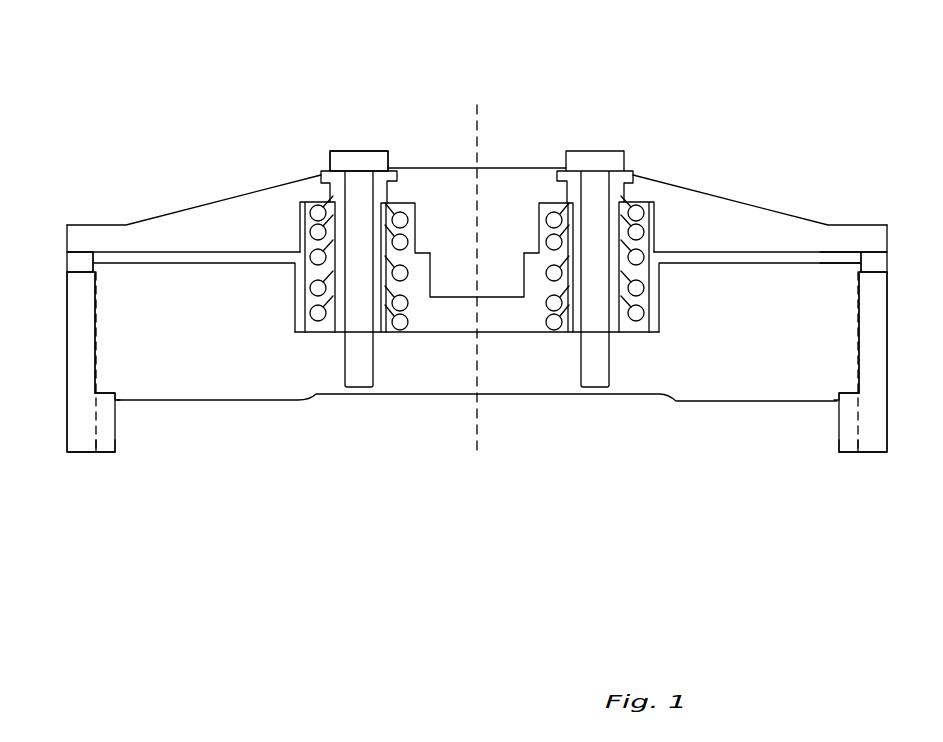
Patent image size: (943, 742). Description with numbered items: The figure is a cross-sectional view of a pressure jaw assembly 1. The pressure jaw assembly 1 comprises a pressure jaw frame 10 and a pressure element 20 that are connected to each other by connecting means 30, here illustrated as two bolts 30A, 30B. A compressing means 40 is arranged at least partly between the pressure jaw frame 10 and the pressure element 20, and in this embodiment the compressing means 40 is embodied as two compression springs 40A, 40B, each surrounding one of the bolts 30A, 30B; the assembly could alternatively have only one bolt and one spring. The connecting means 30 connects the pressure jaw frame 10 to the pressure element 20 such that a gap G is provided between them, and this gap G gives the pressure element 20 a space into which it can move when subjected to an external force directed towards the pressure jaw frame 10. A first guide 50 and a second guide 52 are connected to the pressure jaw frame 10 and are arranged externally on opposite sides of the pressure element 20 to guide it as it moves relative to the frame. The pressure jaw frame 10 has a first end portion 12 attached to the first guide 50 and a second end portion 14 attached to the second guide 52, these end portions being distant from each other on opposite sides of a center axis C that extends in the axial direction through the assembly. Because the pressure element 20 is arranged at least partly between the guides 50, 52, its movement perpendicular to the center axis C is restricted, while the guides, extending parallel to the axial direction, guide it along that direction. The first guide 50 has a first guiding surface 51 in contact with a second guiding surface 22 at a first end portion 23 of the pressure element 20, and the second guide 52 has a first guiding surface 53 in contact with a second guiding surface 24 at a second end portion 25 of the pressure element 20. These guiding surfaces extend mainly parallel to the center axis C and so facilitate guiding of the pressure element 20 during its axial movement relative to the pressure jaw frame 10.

The pressure jaw assembly 1 is at (232, 147).
The pressure jaw frame 10 is at (222, 227).
The first end portion 12 is at (94, 251).
The second end portion 14 is at (879, 251).
The pressure element 20 is at (505, 373).
The second guiding surface 22 is at (103, 394).
The first end portion 23 is at (120, 348).
The second guiding surface 24 is at (851, 394).
The second end portion 25 is at (852, 348).
The connecting means 30 is at (335, 142).
The bolt 30A is at (338, 162).
The bolt 30B is at (578, 155).
The compressing means 40 is at (298, 322).
The compression spring 40A is at (396, 218).
The compression spring 40B is at (633, 207).
The first guide 50 is at (80, 483).
The first guiding surface 51 is at (105, 448).
The second guide 52 is at (837, 483).
The first guiding surface 53 is at (848, 442).
The center axis C is at (477, 267).
The gap G is at (822, 257).